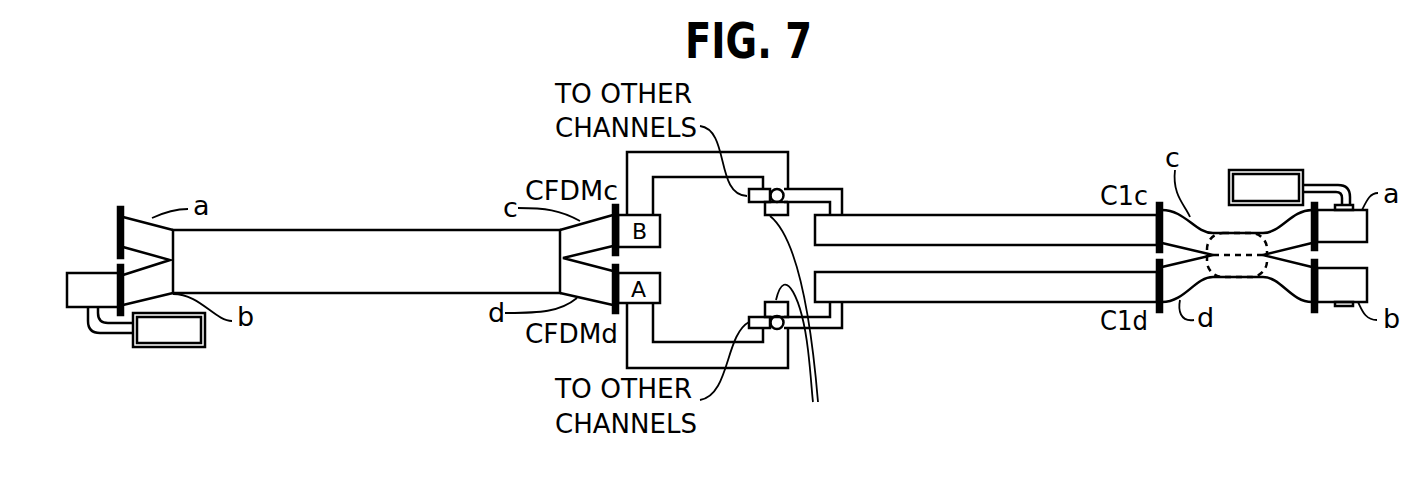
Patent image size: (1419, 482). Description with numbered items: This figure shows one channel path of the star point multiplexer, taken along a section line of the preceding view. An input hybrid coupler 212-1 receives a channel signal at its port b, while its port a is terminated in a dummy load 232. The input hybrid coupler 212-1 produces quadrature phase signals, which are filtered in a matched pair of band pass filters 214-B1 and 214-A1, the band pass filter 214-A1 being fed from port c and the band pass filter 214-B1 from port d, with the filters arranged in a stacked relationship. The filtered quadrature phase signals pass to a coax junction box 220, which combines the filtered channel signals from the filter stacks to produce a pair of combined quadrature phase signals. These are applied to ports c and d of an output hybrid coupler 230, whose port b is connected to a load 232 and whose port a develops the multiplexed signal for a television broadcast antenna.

The output hybrid coupler 230 is at (345, 230).
The dummy load 232 is at (152, 347).
The coax junction box 220 is at (762, 152).
The band pass filter 214-B1 is at (1007, 215).
The band pass filter 214-A1 is at (997, 303).
The input hybrid coupler 212-1 is at (1238, 302).